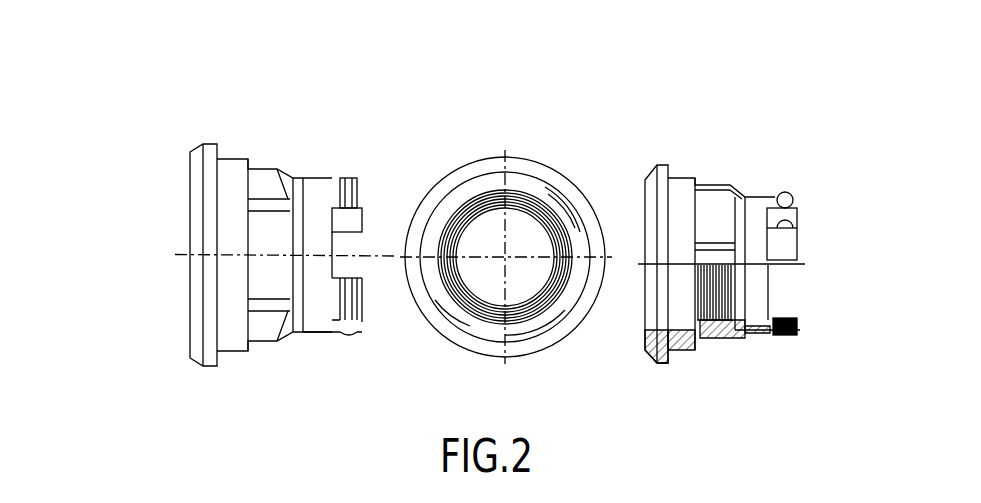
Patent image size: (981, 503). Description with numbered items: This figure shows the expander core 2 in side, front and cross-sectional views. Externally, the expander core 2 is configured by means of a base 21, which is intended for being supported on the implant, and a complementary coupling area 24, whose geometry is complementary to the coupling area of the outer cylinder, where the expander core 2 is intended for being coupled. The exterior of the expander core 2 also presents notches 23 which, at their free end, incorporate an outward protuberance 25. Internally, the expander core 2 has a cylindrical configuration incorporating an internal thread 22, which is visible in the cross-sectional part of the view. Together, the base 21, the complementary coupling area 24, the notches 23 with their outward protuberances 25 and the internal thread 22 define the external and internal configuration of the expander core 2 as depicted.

The expander core 2 is at (172, 110).
The base 21 is at (190, 230).
The internal thread 22 is at (717, 293).
The notches 23 is at (356, 331).
The complementary coupling area 24 is at (292, 132).
The outward protuberance 25 is at (349, 178).